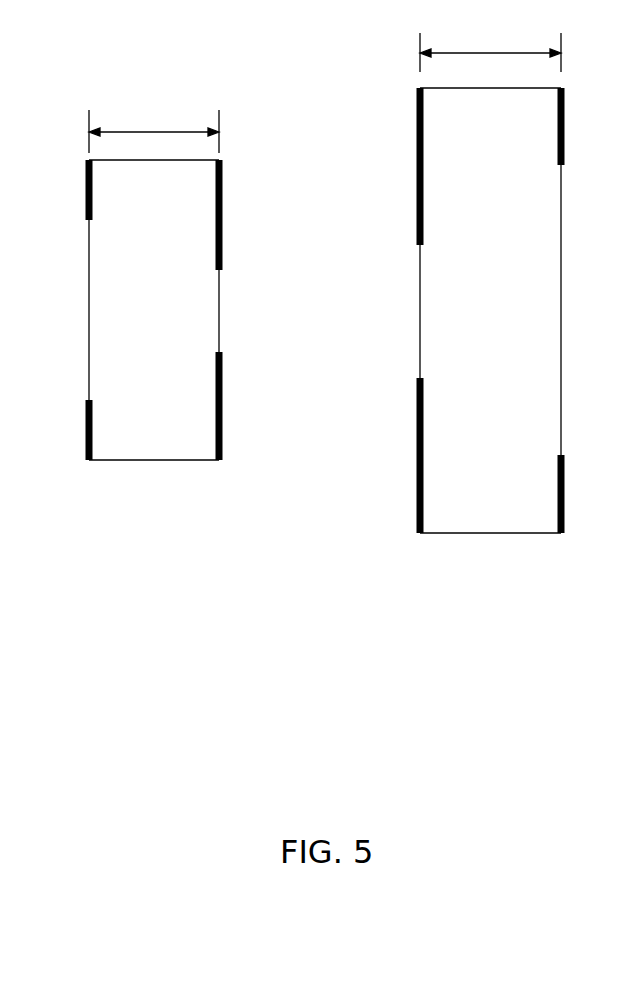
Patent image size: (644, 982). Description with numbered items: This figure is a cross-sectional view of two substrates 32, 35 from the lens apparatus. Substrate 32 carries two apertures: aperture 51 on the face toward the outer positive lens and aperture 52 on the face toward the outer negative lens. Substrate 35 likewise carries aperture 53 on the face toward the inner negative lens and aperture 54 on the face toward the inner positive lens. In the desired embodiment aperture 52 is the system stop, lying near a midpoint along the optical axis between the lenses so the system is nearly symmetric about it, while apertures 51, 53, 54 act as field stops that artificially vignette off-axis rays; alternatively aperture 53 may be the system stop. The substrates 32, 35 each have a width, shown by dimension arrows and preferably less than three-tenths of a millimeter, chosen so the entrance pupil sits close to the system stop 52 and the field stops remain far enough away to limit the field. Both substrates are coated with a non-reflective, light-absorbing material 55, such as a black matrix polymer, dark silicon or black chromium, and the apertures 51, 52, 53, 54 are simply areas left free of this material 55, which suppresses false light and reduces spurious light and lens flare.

The substrate 32 is at (152, 274).
The substrate 35 is at (488, 271).
The aperture 51 is at (89, 312).
The aperture 52 is at (220, 306).
The aperture 53 is at (420, 322).
The aperture 54 is at (562, 317).
The light-absorbing material 55 is at (85, 184).